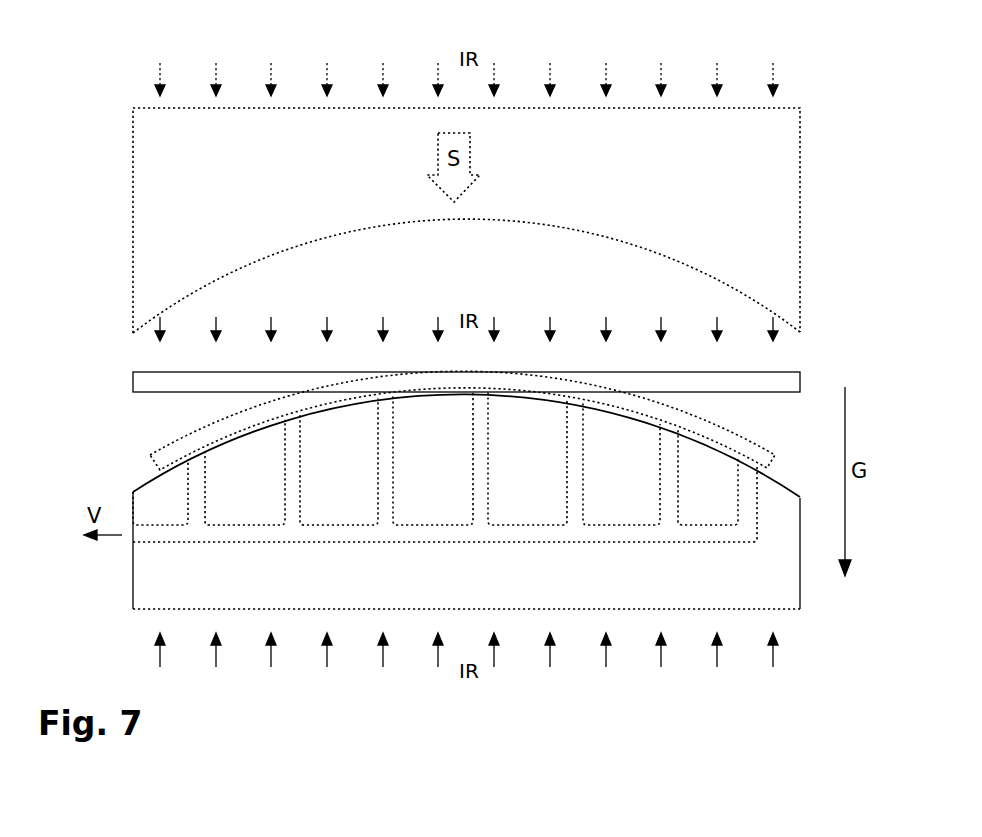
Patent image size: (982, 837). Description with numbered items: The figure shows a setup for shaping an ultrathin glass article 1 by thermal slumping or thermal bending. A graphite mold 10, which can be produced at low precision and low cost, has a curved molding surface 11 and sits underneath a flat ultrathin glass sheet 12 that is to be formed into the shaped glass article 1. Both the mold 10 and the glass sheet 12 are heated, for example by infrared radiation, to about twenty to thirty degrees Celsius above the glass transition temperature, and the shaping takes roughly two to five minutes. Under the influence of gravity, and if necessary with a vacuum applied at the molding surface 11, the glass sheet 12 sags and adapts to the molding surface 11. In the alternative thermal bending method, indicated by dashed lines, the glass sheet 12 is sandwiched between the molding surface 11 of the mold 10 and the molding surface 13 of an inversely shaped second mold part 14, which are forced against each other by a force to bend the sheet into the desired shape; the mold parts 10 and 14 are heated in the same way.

The ultrathin glass article 1 is at (188, 441).
The graphite mold 10 is at (195, 582).
The molding surface 11 is at (140, 474).
The ultrathin glass sheet 12 is at (188, 381).
The molding surface of second mold part 13 is at (242, 250).
The second mold part 14 is at (183, 176).